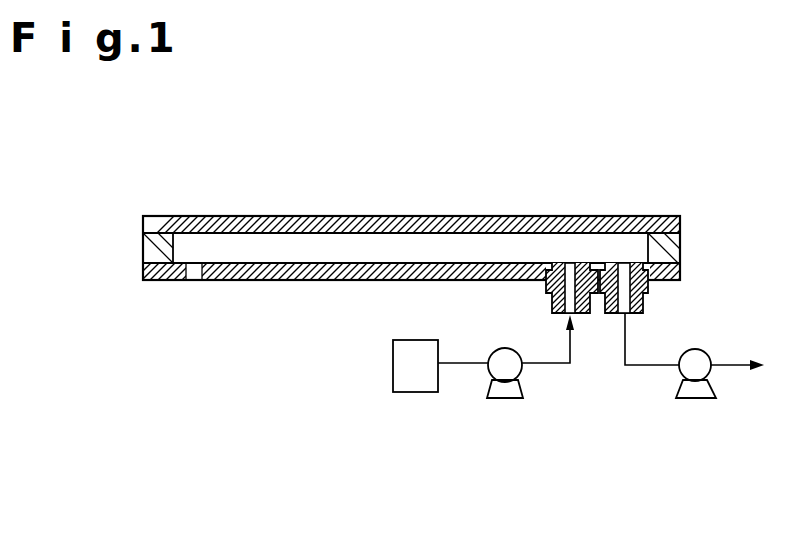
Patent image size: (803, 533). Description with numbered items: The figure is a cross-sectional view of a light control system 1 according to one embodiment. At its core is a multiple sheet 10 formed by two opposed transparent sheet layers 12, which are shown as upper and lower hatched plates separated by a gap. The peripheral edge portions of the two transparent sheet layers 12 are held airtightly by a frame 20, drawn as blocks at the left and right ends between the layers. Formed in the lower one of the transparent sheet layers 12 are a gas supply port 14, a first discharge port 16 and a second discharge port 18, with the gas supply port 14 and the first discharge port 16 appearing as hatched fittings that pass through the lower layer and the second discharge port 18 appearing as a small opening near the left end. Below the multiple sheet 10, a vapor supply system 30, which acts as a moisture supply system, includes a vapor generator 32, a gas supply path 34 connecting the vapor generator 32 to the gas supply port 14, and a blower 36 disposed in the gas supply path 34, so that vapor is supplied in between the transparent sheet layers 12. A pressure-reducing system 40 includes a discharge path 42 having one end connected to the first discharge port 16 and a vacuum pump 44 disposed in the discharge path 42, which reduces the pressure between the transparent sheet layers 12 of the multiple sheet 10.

The light control system 1 is at (412, 178).
The multiple sheet 10 is at (552, 156).
The transparent sheet layer 12 is at (488, 216).
The gas supply port 14 is at (548, 301).
The first discharge port 16 is at (648, 300).
The second discharge port 18 is at (200, 281).
The frame 20 is at (144, 247).
The vapor supply system 30 is at (548, 455).
The vapor generator 32 is at (422, 392).
The gas supply path 34 is at (553, 363).
The blower 36 is at (505, 398).
The pressure-reducing system 40 is at (700, 455).
The discharge path 42 is at (651, 365).
The vacuum pump 44 is at (697, 398).